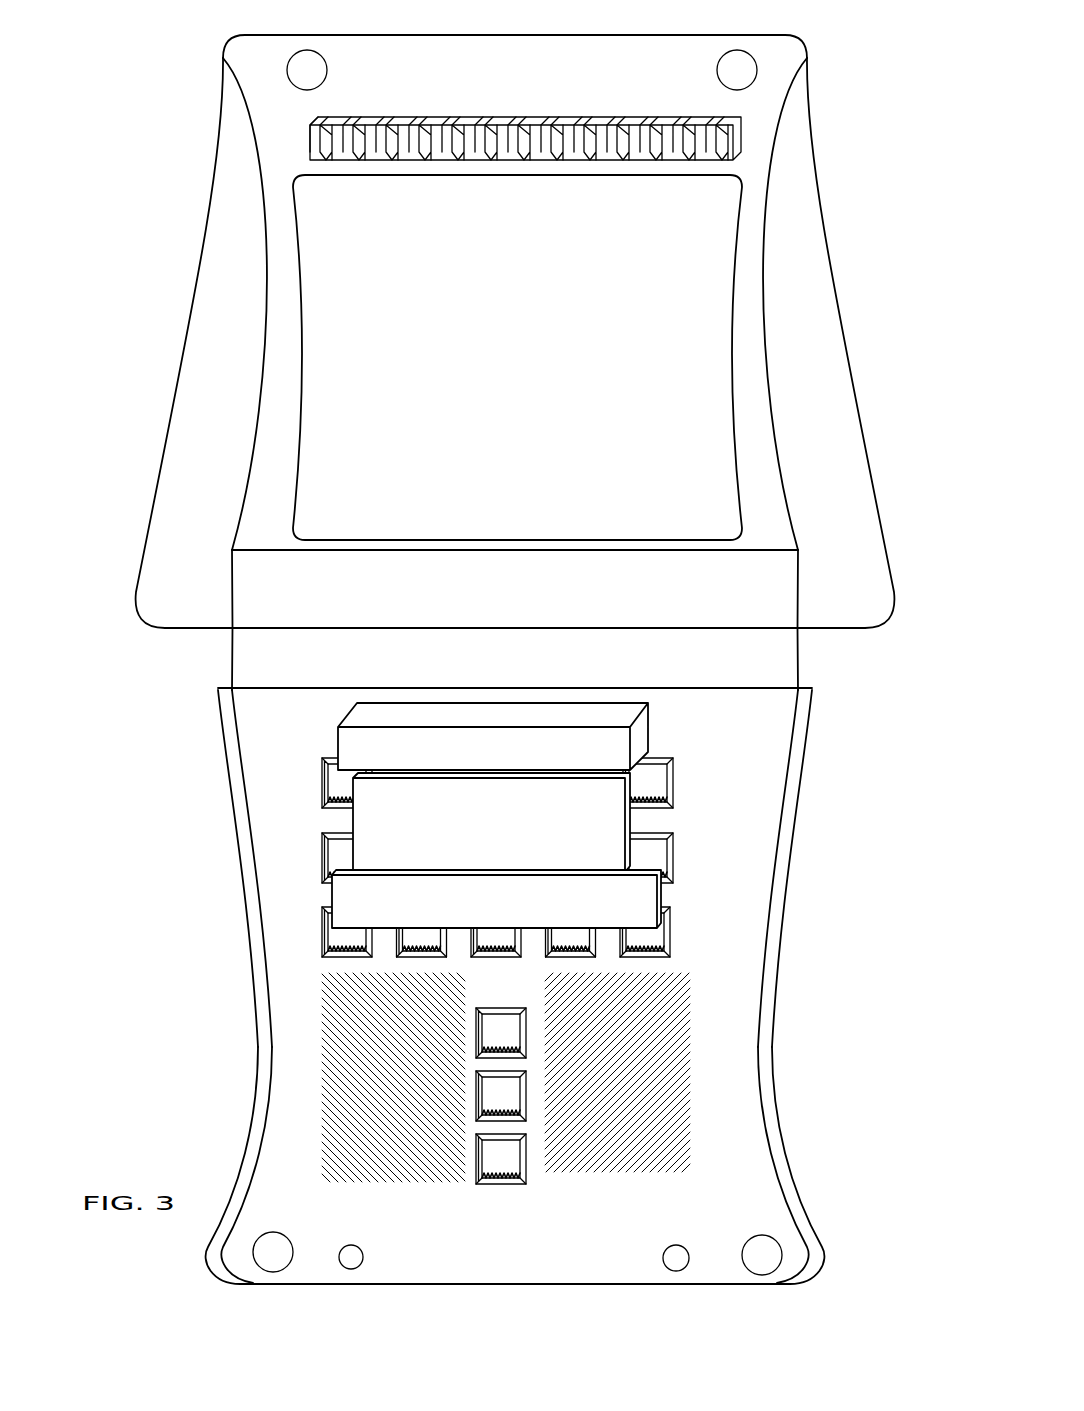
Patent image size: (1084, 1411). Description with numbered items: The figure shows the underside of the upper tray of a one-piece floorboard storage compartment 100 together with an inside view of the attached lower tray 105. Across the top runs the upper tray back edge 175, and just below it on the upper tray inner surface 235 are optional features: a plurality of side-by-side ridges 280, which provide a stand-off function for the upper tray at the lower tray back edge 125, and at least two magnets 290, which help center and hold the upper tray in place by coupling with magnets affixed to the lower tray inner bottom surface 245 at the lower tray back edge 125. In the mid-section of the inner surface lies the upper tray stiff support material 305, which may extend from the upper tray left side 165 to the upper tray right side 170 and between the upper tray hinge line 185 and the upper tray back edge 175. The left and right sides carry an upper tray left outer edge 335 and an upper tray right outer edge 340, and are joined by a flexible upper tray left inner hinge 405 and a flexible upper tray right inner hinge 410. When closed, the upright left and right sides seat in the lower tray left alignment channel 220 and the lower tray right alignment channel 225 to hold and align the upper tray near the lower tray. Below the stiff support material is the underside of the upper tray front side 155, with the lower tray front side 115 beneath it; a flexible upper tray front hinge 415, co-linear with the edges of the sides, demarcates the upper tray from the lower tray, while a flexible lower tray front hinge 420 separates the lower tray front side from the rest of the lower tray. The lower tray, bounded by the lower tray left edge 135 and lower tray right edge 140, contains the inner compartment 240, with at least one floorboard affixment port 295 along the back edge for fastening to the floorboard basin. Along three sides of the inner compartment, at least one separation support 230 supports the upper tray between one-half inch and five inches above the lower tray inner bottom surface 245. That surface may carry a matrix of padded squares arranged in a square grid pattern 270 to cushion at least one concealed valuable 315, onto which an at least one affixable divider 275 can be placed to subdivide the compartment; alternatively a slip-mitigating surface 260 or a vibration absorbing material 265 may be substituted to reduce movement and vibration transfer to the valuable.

The one-piece floorboard storage compartment 100 is at (115, 53).
The lower tray 105 is at (287, 740).
The lower tray front side 115 is at (496, 668).
The lower tray back edge 125 is at (510, 1283).
The lower tray left edge 135 is at (263, 969).
The lower tray right edge 140 is at (757, 1013).
The upper tray front side 155 is at (496, 597).
The upper tray left side 165 is at (151, 343).
The upper tray right side 170 is at (876, 343).
The upper tray back edge 175 is at (441, 37).
The upper tray hinge line 185 is at (380, 551).
The lower tray left alignment channel 220 is at (237, 807).
The lower tray right alignment channel 225 is at (797, 820).
The at least one separation support 230 is at (474, 914).
The upper tray inner surface 235 is at (280, 145).
The inner compartment 240 is at (478, 993).
The lower tray inner bottom surface 245 is at (665, 822).
The slip-mitigating surface 260 is at (388, 1107).
The vibration absorbing material 265 is at (632, 1098).
The matrix of padded squares arranged in a square grid pattern 270 is at (337, 940).
The at least one affixable divider 275 is at (474, 764).
The plurality of side-by-side ridges 280 is at (550, 117).
The at least two magnets 290 is at (328, 68).
The at least one floorboard affixment port 295 is at (281, 1233).
The upper tray stiff support material 305 is at (489, 351).
The at least one concealed valuable 315 is at (469, 836).
The upper tray left outer edge 335 is at (157, 455).
The upper tray right outer edge 340 is at (866, 446).
The flexible upper tray left inner hinge 405 is at (263, 330).
The flexible upper tray right inner hinge 410 is at (762, 340).
The flexible upper tray front hinge 415 is at (248, 630).
The flexible lower tray front hinge 420 is at (250, 688).